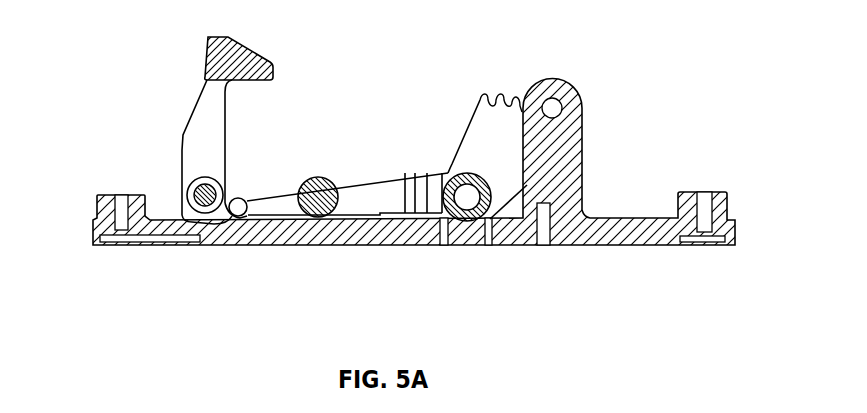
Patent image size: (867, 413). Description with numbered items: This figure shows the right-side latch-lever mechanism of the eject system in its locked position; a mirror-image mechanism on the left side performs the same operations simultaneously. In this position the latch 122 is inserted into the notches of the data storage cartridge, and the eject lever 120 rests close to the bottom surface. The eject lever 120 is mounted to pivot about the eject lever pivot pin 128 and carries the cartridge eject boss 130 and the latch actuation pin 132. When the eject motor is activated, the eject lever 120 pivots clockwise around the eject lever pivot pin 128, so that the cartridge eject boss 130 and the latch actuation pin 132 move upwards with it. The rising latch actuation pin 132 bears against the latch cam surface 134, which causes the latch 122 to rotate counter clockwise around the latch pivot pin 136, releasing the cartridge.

The eject lever 120 is at (493, 118).
The latch 122 is at (190, 130).
The eject lever pivot pin 128 is at (468, 200).
The cartridge eject boss 130 is at (318, 180).
The latch actuation pin 132 is at (241, 216).
The latch cam surface 134 is at (232, 218).
The latch pivot pin 136 is at (181, 193).